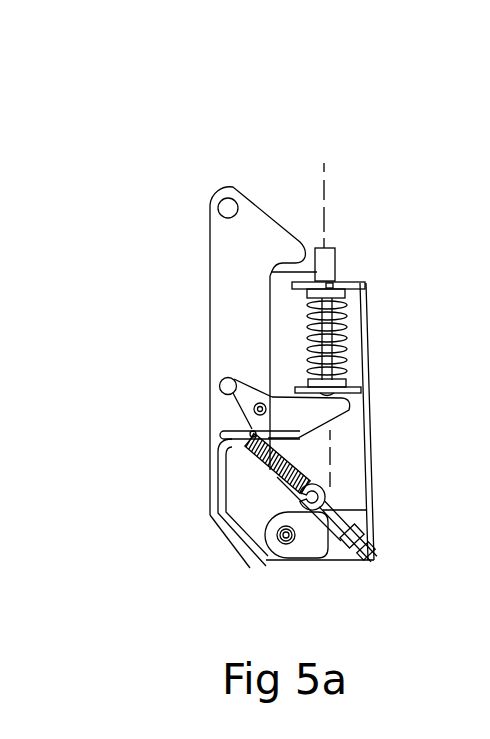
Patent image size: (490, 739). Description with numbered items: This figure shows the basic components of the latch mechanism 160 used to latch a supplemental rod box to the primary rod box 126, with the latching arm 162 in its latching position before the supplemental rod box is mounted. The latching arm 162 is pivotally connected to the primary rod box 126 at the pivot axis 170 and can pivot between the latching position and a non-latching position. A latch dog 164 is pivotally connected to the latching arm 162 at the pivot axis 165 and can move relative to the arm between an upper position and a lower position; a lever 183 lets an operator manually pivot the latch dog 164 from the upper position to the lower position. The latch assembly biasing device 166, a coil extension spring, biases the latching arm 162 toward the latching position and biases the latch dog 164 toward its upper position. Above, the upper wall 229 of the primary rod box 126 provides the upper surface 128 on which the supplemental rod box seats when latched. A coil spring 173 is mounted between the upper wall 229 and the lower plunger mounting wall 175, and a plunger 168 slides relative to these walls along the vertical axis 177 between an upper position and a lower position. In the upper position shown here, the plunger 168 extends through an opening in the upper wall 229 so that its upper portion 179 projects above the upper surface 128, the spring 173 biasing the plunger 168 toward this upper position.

The latch mechanism 160 is at (167, 187).
The latching arm 162 is at (229, 300).
The latch dog 164 is at (297, 425).
The pivot axis 165 is at (232, 391).
The latch assembly biasing device 166 is at (277, 476).
The plunger 168 is at (347, 348).
The pivot axis 170 is at (278, 538).
The coil spring 173 is at (342, 332).
The lower plunger mounting wall 175 is at (351, 385).
The vertical axis 177 is at (321, 186).
The upper portion 179 is at (229, 268).
The lever 183 is at (226, 513).
The primary rod box 126 is at (391, 294).
The upper surface 128 is at (336, 281).
The upper wall 229 is at (352, 281).